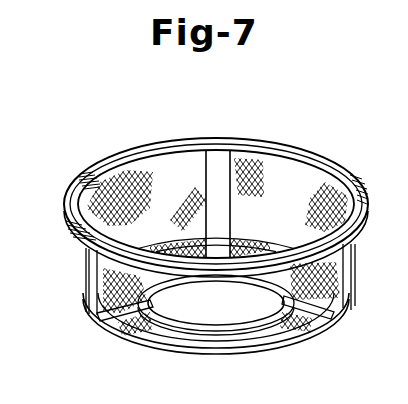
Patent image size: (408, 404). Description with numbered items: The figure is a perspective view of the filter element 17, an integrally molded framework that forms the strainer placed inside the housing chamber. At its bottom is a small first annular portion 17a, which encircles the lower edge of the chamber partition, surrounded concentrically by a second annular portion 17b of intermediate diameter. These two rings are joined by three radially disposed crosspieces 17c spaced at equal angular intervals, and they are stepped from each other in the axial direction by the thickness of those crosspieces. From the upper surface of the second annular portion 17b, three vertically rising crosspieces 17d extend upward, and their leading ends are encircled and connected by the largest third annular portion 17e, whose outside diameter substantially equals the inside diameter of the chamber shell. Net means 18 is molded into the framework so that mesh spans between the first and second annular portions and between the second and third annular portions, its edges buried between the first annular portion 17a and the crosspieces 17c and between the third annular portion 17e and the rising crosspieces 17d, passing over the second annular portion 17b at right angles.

The filter element 17 is at (294, 137).
The first annular portion 17a is at (269, 326).
The second annular portion 17b is at (331, 329).
The radially disposed crosspieces 17c is at (124, 316).
The vertically rising crosspieces 17d is at (223, 183).
The third annular portion 17e is at (70, 199).
The net means 18 is at (152, 198).